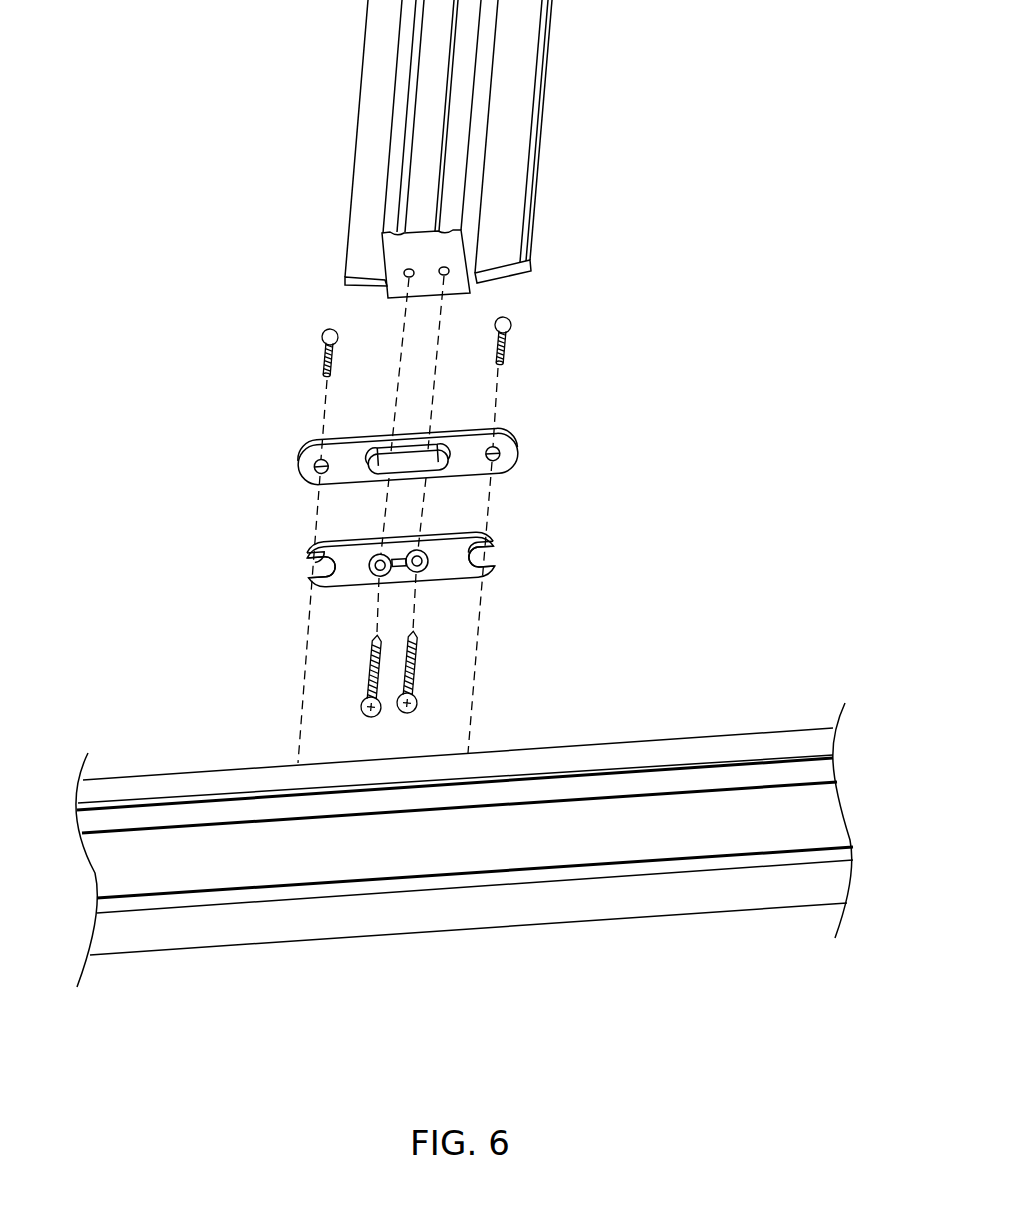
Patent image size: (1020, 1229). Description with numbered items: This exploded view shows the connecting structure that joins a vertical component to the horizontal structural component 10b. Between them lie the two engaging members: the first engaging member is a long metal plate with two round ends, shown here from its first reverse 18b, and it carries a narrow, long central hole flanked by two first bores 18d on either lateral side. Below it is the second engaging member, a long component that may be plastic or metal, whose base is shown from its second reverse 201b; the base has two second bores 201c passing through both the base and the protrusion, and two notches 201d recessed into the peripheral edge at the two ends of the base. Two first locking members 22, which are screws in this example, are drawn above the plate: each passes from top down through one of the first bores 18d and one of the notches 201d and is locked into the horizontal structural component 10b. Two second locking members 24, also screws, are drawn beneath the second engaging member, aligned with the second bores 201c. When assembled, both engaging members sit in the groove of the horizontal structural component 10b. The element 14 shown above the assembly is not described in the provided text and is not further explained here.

The upper rail 14 is at (482, 78).
The first locking member 22 is at (510, 333).
The first reverse 18b is at (502, 465).
The first bore 18d is at (500, 452).
The second reverse 201b is at (330, 585).
The notch 201d is at (305, 568).
The second bore 201c is at (378, 570).
The second locking member 24 is at (415, 675).
The horizontal structural component 10b is at (702, 825).